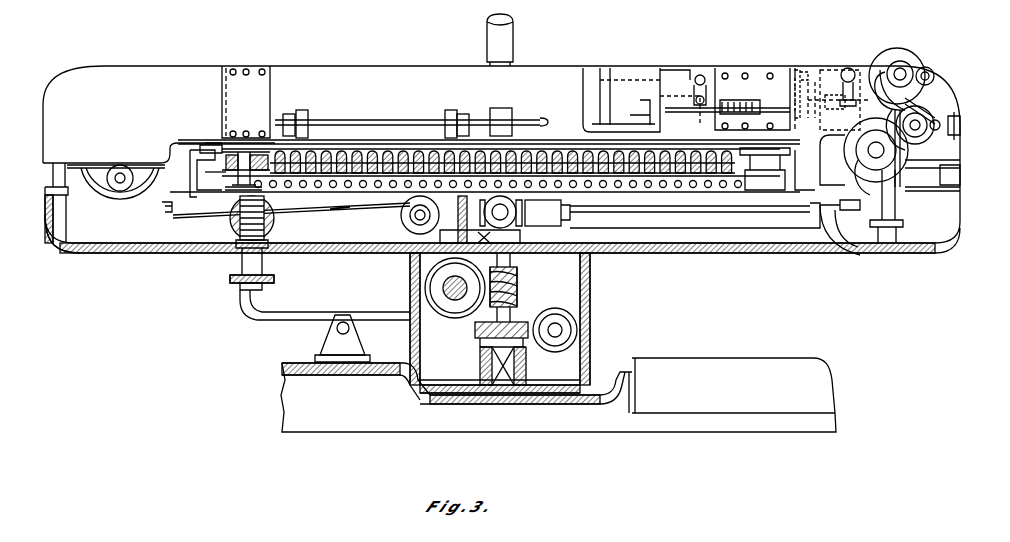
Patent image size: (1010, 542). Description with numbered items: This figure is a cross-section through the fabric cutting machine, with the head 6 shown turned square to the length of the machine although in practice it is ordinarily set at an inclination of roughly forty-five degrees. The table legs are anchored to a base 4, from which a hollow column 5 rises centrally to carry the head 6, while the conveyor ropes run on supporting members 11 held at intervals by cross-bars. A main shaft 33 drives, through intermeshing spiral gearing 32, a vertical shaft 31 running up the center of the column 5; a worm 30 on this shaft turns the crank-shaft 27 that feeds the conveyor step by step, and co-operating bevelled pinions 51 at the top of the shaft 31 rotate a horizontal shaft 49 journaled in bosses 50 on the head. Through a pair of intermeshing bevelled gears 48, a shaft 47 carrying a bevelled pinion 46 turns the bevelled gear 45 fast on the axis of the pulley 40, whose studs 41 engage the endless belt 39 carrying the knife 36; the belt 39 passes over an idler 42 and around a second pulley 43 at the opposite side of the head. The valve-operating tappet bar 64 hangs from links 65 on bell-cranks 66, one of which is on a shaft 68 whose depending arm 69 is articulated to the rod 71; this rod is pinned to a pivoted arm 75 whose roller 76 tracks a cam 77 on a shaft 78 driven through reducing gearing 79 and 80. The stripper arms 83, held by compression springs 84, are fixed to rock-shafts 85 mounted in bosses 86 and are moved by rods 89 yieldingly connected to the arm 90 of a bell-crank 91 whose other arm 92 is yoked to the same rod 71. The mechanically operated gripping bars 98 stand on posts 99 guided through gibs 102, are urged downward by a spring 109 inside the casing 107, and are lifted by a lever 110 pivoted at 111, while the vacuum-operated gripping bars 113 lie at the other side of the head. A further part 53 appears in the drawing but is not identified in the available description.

The base 4 is at (752, 368).
The hollow column 5 is at (590, 288).
The head 6 is at (45, 104).
The conveyor supporting members 11 is at (408, 160).
The crank-shaft 27 is at (440, 292).
The worm 30 is at (517, 282).
The vertical shaft 31 is at (512, 305).
The spiral gearing 32 is at (540, 342).
The main shaft 33 is at (563, 328).
The knife 36 is at (170, 214).
The endless belt 39 is at (215, 216).
The pulley 40 is at (960, 188).
The studs 41 is at (945, 168).
The idler 42 is at (400, 222).
The second pulley 43 is at (119, 206).
The bevelled gear 45 is at (893, 192).
The bevelled pinion 46 is at (850, 152).
The shaft 47 is at (896, 215).
The intermeshing bevelled gears 48 is at (855, 238).
The horizontal shaft 49 is at (725, 214).
The bosses 50 is at (560, 226).
The bevelled pinions 51 is at (517, 212).
The knob 53 is at (513, 44).
The tappet bar 64 is at (638, 82).
The links 65 is at (660, 72).
The bell-cranks 66 is at (684, 70).
The shaft 68 is at (706, 78).
The depending arm 69 is at (706, 92).
The rod 71 is at (725, 100).
The pivoted arm 75 is at (940, 108).
The roller 76 is at (930, 68).
The cam 77 is at (882, 72).
The shaft 78 is at (902, 66).
The reducing gearing 79 is at (960, 127).
The reducing gearing 80 is at (938, 102).
The arm 83 is at (303, 112).
The compression spring 84 is at (290, 114).
The rock-shaft 85 is at (372, 120).
The bosses 86 is at (507, 114).
The rods 89 is at (802, 78).
The bell-crank arm 90 is at (830, 72).
The bell-crank 91 is at (849, 68).
The bell-crank arm 92 is at (831, 89).
The gripping bars 98 is at (218, 147).
The posts 99 is at (242, 152).
The gibs 102 is at (226, 176).
The casing 107 is at (110, 255).
The spring 109 is at (276, 235).
The lever 110 is at (248, 322).
The pivot 111 is at (343, 322).
The gripping bars 113 is at (762, 175).